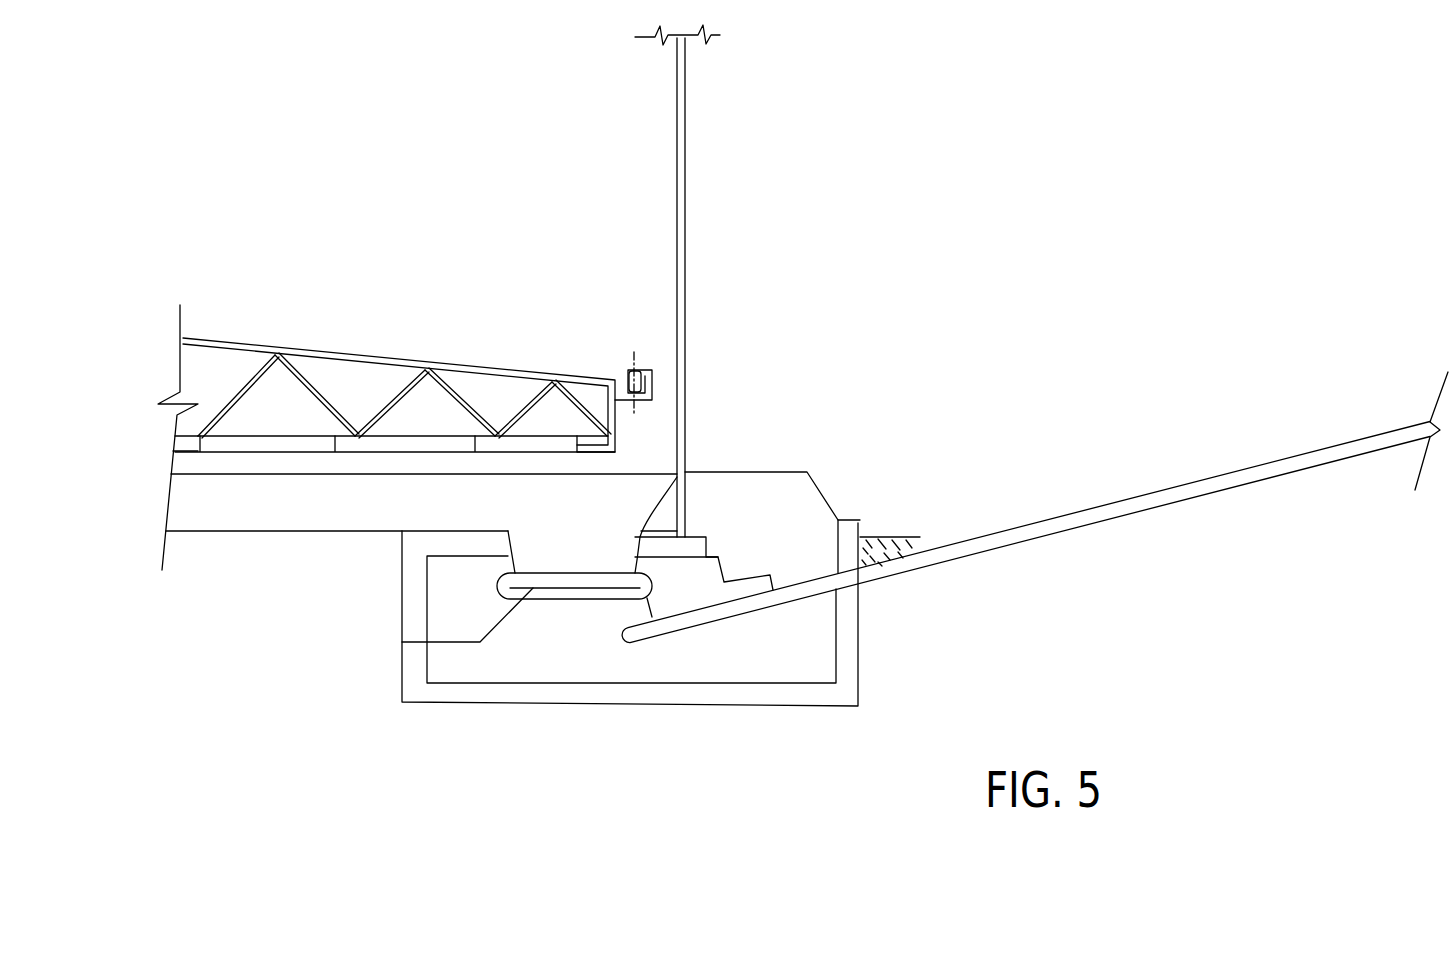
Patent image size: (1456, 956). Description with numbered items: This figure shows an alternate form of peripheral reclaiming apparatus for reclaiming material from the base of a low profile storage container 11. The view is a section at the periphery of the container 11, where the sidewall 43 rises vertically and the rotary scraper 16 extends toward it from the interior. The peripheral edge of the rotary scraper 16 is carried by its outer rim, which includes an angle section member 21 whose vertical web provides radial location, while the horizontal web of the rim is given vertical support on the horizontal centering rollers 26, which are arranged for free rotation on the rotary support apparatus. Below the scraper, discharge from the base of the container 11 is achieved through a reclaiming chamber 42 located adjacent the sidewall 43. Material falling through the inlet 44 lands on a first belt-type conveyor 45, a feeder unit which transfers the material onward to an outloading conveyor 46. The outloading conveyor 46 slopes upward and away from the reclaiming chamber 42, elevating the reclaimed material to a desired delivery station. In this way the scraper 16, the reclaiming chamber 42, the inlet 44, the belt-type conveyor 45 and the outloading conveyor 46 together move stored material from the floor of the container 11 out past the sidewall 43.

The container 11 is at (472, 143).
The rotary scraper 16 is at (488, 348).
The horizontal centering rollers 26 is at (377, 444).
The sidewall 43 is at (687, 267).
The angle section member 21 is at (645, 385).
The inlet 44 is at (578, 557).
The first belt-type conveyor 45 is at (570, 603).
The reclaiming chamber 42 is at (818, 652).
The outloading conveyor 46 is at (958, 545).